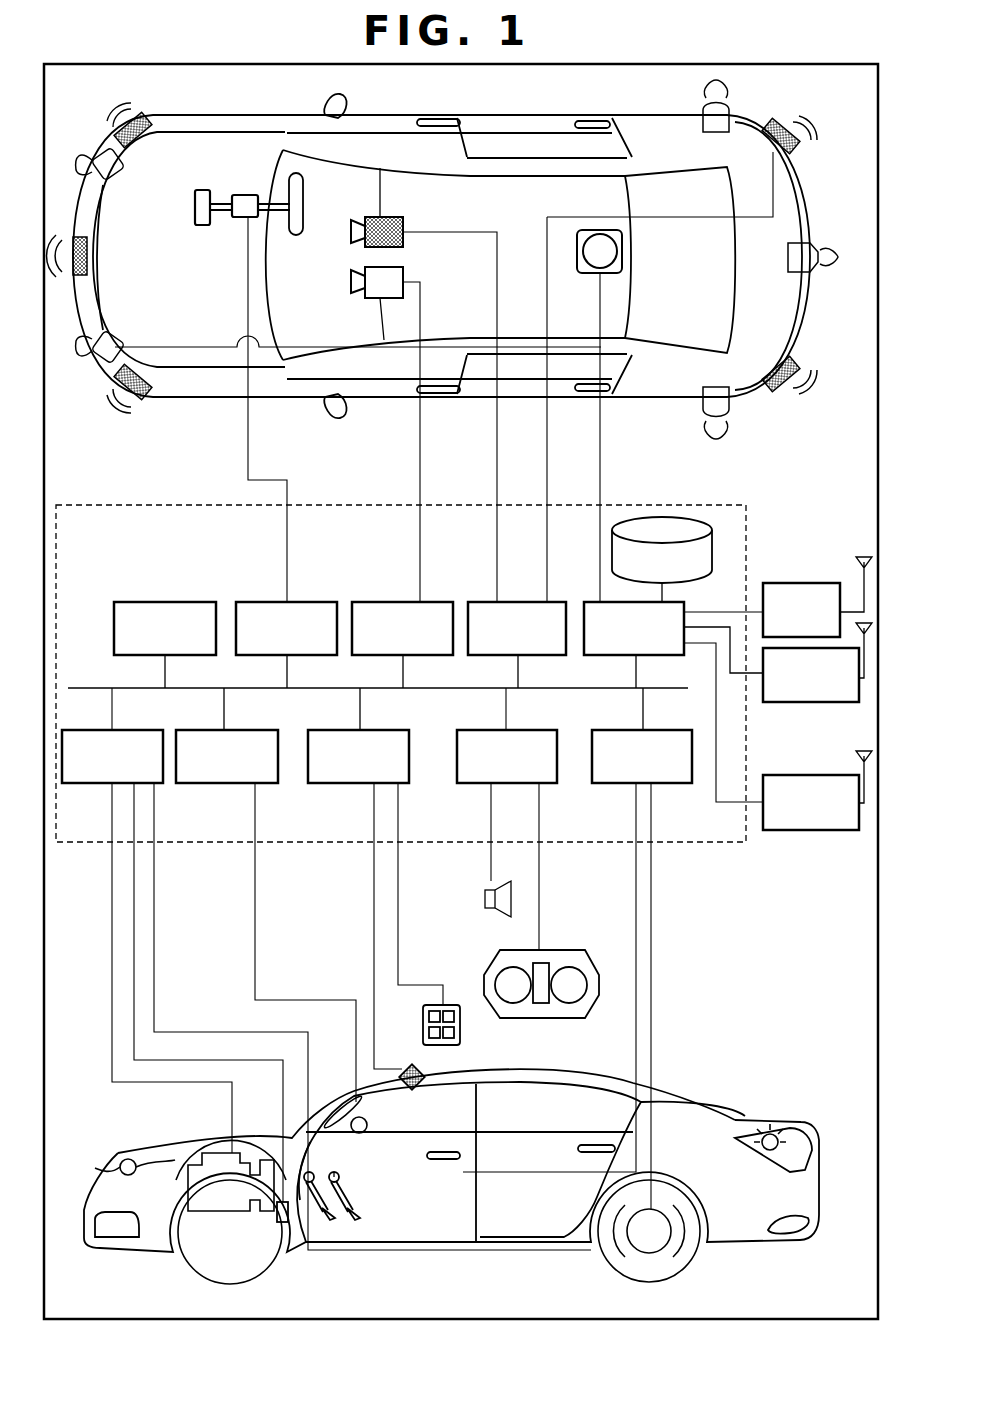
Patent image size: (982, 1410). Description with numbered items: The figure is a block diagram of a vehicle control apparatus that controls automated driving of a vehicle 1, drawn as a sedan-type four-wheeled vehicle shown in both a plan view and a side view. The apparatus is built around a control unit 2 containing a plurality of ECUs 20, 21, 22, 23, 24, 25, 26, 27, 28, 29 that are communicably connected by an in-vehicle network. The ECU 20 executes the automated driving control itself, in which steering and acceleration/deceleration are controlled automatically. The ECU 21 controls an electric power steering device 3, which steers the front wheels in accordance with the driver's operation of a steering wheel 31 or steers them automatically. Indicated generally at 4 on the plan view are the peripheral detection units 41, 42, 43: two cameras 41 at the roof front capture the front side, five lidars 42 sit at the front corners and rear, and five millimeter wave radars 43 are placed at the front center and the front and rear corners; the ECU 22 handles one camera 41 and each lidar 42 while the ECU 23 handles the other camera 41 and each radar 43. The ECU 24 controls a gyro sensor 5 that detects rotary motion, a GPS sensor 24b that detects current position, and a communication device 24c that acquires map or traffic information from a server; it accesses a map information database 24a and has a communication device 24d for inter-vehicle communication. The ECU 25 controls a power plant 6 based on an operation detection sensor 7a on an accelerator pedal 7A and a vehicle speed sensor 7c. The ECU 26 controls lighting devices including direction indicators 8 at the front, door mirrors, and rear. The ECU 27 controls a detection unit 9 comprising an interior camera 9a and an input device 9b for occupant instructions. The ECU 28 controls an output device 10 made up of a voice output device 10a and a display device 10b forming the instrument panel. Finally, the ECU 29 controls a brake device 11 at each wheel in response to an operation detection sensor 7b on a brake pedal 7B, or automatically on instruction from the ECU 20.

The vehicle 1 is at (818, 172).
The control unit 2 is at (735, 848).
The electric power steering device 3 is at (201, 228).
The steering wheel 31 is at (296, 238).
The external sensor group 4 is at (99, 122).
The camera 41 is at (406, 241).
The lidar 42 is at (120, 190).
The millimeter wave radar 43 is at (137, 145).
The gyro sensor 5 is at (624, 251).
The power plant 6 is at (205, 1151).
The operation detection sensor 7a is at (338, 1104).
The operation detection sensor 7b is at (338, 1173).
The accelerator pedal 7A is at (334, 1216).
The brake pedal 7B is at (356, 1205).
The vehicle speed sensor 7c is at (285, 1224).
The direction indicator 8 is at (120, 1161).
The detection unit 9 is at (464, 950).
The camera 9a is at (415, 1088).
The input device 9b is at (425, 1031).
The output device 10 is at (543, 900).
The voice output device 10a is at (486, 896).
The display device 10b is at (493, 962).
The brake device 11 is at (655, 1254).
The ECU 20 is at (198, 600).
The ECU 21 is at (316, 600).
The ECU 22 is at (405, 600).
The ECU 23 is at (524, 600).
The ECU 24 is at (586, 600).
The map information database 24a is at (661, 515).
The GPS sensor 24b is at (814, 582).
The communication device 24c is at (807, 704).
The communication device 24d is at (807, 832).
The ECU 25 is at (80, 786).
The ECU 26 is at (199, 786).
The ECU 27 is at (322, 786).
The ECU 28 is at (469, 786).
The ECU 29 is at (677, 786).